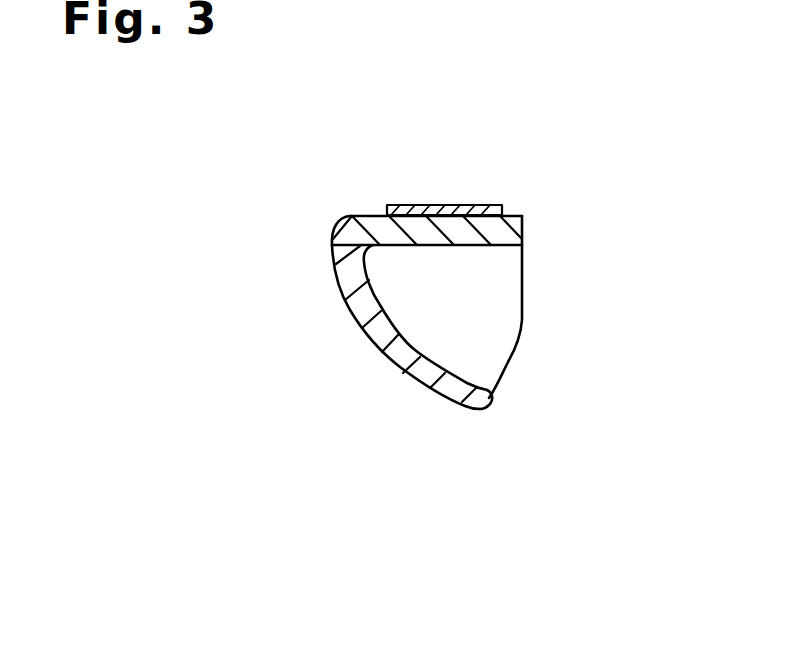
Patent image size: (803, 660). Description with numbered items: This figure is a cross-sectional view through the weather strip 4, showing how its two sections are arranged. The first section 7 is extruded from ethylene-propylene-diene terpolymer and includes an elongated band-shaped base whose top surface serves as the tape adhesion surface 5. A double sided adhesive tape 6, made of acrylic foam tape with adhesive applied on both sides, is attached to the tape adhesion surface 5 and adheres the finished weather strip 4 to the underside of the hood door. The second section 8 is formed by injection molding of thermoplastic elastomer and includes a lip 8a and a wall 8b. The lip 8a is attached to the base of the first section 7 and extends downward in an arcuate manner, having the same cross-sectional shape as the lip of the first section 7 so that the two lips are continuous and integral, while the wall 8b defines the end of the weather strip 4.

The weather strip 4 is at (551, 200).
The tape adhesion surface 5 is at (367, 215).
The double sided adhesive tape 6 is at (435, 205).
The first section 7 is at (340, 216).
The second section 8 is at (308, 335).
The lip 8a is at (373, 333).
The wall 8b is at (412, 337).